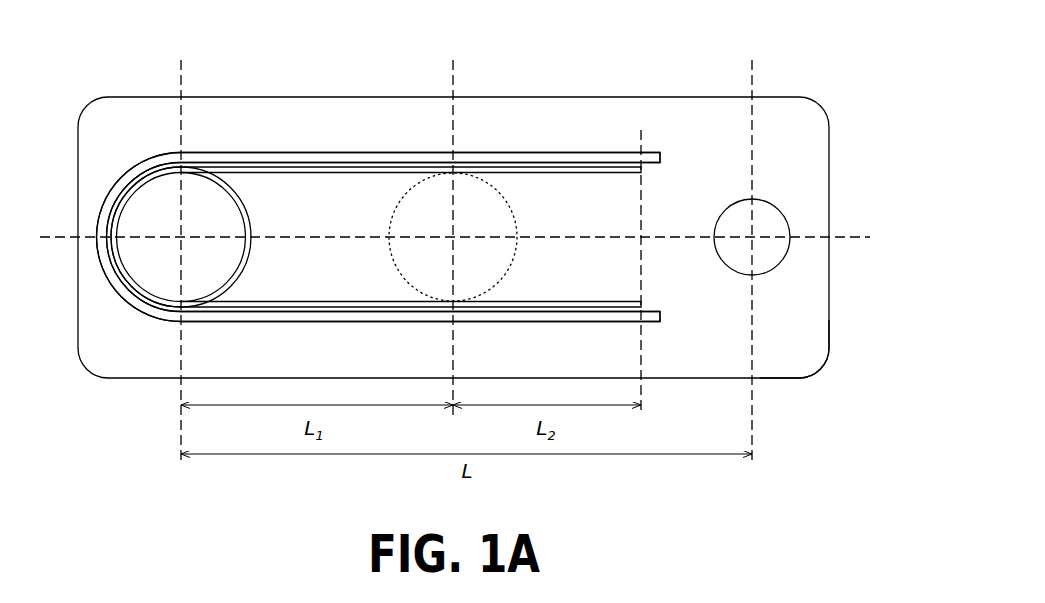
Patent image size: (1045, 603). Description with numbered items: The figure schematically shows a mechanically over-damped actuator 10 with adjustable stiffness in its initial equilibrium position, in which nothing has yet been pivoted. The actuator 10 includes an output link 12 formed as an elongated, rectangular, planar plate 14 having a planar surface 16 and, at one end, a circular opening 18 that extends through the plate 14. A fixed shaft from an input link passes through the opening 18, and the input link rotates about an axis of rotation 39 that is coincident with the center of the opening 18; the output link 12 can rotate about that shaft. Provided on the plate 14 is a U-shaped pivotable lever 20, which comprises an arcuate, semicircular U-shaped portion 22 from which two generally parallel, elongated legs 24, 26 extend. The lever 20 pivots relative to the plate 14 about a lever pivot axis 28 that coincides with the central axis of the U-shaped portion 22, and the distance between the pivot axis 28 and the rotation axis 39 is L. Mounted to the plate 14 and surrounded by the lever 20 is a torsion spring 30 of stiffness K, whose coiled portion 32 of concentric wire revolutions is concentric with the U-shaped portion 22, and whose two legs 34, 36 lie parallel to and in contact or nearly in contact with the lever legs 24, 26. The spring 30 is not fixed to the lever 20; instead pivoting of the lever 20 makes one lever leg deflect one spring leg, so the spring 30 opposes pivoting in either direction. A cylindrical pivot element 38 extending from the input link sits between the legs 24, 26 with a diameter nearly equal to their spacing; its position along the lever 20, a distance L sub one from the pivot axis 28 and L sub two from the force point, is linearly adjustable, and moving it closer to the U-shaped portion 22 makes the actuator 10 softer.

The mechanically over-damped actuator 10 is at (873, 68).
The output link 12 is at (836, 168).
The plate 14 is at (810, 350).
The planar surface 16 is at (102, 139).
The circular opening 18 is at (719, 258).
The axis of rotation 39 is at (750, 235).
The pivotable lever 20 is at (254, 146).
The arcuate U-shaped portion 22 is at (130, 297).
The leg 24 is at (309, 320).
The leg 26 is at (352, 152).
The lever pivot axis 28 is at (180, 235).
The torsion spring 30 is at (263, 271).
The coiled portion 32 is at (250, 221).
The leg 34 is at (531, 305).
The leg 36 is at (531, 173).
The pivot element 38 is at (390, 231).